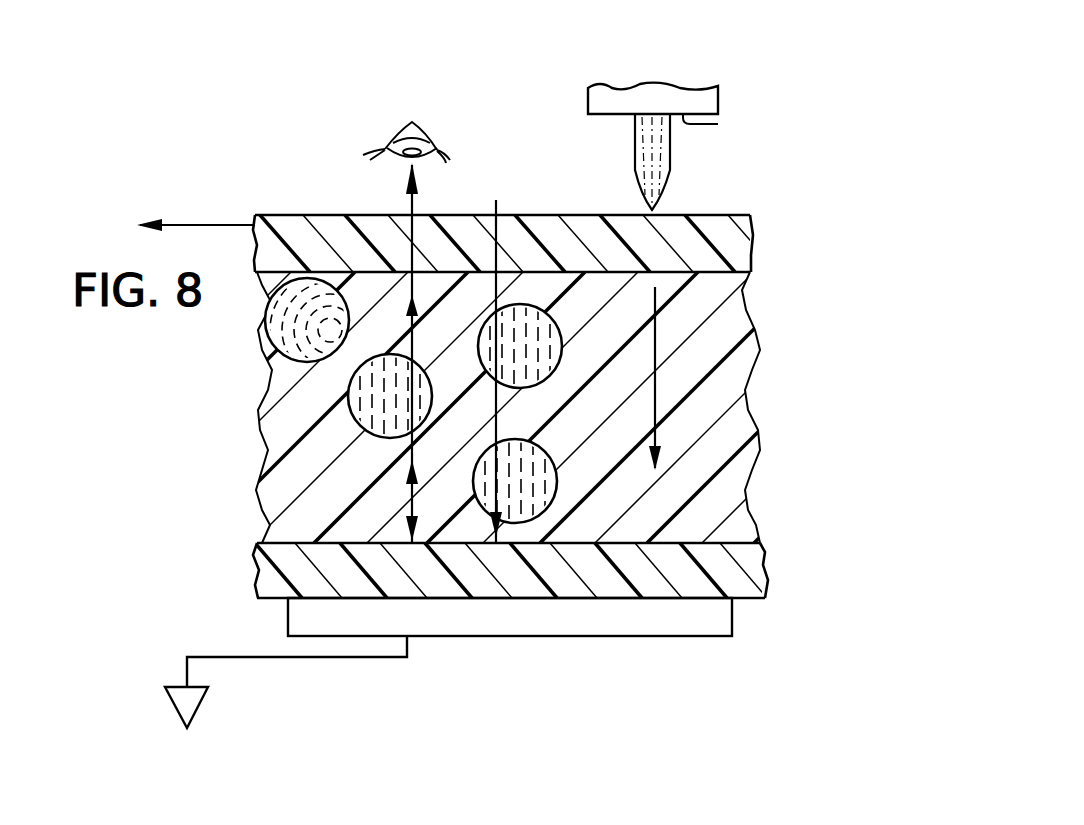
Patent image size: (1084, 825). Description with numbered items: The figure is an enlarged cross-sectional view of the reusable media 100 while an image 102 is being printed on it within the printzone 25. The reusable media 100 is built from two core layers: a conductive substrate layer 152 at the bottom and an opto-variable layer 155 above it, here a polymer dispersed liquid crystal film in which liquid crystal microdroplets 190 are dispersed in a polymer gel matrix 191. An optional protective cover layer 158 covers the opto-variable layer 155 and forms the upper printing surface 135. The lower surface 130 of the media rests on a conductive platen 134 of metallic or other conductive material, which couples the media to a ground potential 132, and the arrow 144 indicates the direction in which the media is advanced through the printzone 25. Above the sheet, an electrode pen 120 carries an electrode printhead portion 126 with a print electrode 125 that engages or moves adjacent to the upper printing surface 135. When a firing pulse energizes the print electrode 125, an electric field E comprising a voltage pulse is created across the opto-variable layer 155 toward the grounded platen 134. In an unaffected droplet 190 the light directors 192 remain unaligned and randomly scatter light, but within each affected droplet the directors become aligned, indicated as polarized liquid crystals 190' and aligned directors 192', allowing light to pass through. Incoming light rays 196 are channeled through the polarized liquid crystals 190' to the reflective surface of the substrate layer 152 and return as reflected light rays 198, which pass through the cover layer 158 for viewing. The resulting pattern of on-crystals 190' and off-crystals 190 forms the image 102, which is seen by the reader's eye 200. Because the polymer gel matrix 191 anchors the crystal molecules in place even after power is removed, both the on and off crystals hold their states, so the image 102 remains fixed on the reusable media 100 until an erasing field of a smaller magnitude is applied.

The reusable media 100 is at (215, 90).
The image 102 is at (303, 207).
The electrode pen 120 is at (702, 101).
The print electrode 125 is at (655, 157).
The electrode printhead portion 126 is at (690, 124).
The lower surface 130 is at (278, 600).
The ground potential 132 is at (192, 700).
The conductive platen 134 is at (710, 620).
The upper printing surface 135 is at (709, 214).
The media advance arrow 144 is at (188, 223).
The conductive substrate layer 152 is at (755, 567).
The opto-variable layer 155 is at (724, 395).
The protective cover layer 158 is at (737, 240).
The liquid crystal microdroplet 190 is at (285, 330).
The polarized liquid crystal 190' is at (523, 413).
The polymer gel matrix 191 is at (307, 454).
The light director 192 is at (227, 268).
The aligned light director 192' is at (526, 363).
The incoming light ray 196 is at (496, 237).
The reflected light ray 198 is at (410, 203).
The reader's eye 200 is at (423, 142).
The printzone 25 is at (590, 189).
The electric field E is at (657, 343).